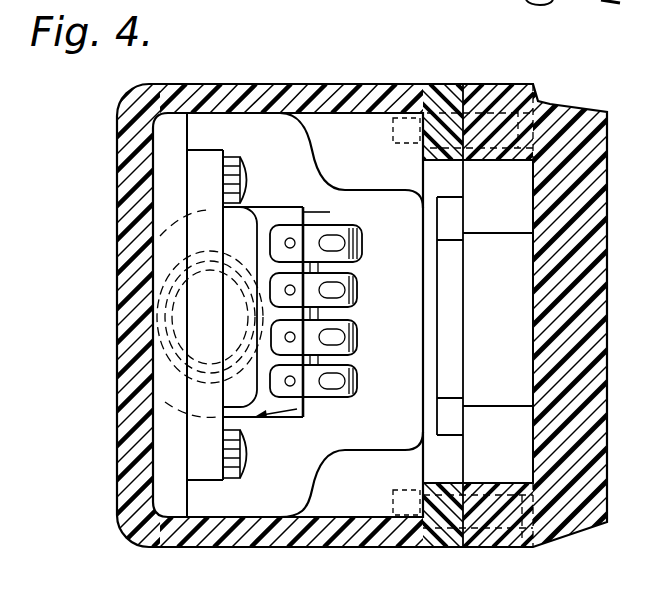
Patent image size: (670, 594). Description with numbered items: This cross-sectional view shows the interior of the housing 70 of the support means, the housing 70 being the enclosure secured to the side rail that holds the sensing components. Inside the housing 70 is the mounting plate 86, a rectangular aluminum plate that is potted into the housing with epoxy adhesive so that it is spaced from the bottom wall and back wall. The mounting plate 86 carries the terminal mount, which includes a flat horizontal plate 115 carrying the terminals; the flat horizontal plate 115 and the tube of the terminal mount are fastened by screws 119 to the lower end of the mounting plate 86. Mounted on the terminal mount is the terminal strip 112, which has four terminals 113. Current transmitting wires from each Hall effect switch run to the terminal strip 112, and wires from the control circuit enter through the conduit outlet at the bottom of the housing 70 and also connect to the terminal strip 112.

The housing 70 is at (378, 84).
The mounting plate 86 is at (201, 161).
The screws 119 is at (248, 178).
The flat horizontal plate 115 is at (306, 210).
The terminals 113 is at (362, 248).
The terminal strip 112 is at (305, 412).